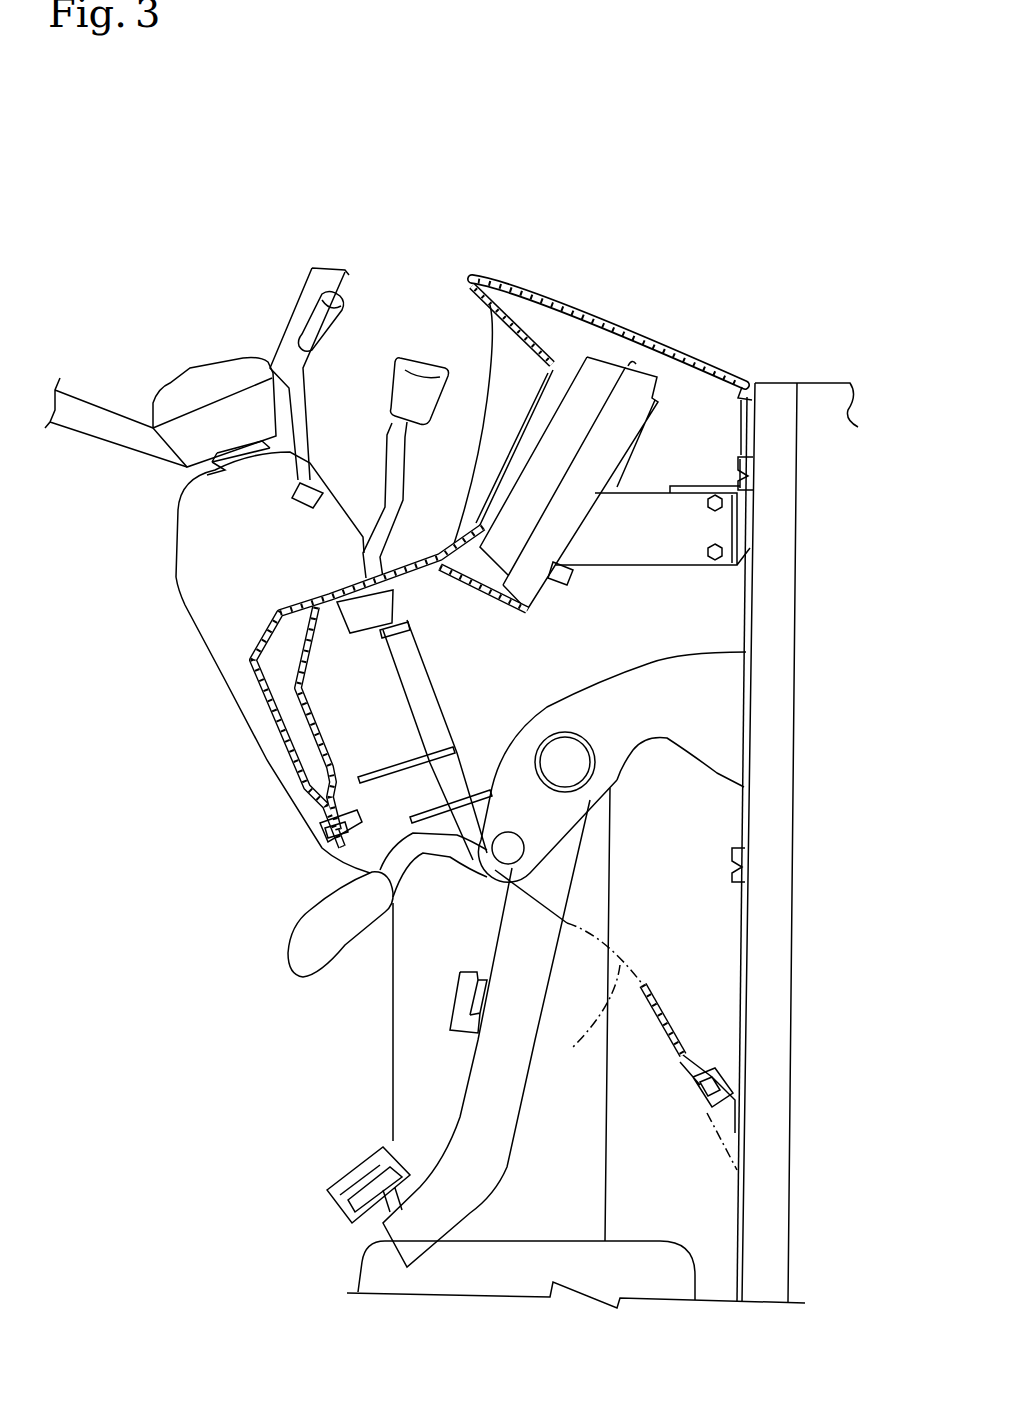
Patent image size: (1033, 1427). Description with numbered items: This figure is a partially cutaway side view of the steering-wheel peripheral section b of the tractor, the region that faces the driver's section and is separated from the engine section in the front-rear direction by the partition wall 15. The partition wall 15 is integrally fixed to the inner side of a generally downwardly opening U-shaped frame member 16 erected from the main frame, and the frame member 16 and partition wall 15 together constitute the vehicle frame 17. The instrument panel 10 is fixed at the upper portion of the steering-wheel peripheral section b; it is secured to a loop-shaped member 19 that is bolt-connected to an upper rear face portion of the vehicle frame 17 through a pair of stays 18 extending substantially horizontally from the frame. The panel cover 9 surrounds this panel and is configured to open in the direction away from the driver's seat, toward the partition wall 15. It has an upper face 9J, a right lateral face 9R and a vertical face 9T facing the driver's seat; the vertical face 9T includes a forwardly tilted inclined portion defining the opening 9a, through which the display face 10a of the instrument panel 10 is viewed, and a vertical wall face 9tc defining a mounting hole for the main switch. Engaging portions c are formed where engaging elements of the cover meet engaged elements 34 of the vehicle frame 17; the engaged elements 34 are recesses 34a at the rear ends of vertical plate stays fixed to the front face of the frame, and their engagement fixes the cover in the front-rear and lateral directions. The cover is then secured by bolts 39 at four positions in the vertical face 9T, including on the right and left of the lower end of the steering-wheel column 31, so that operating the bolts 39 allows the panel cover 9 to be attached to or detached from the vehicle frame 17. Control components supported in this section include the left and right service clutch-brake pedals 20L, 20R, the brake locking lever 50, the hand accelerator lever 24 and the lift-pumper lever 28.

The panel cover 9 is at (526, 263).
The upper face 9J is at (604, 309).
The opening 9a is at (532, 375).
The vertical face 9T is at (310, 578).
The vertical wall face 9tc is at (280, 764).
The right lateral face 9R is at (616, 1020).
The instrument panel 10 is at (500, 542).
The display face 10a is at (494, 451).
The partition wall 15 is at (700, 610).
The frame member 16 is at (780, 652).
The vehicle frame 17 is at (617, 845).
The stay 18 is at (647, 503).
The loop-shaped member 19 is at (633, 363).
The left service clutch-brake pedal 20L is at (362, 1168).
The right service clutch-brake pedal 20R is at (309, 1170).
The hand accelerator lever 24 is at (396, 400).
The lift-pumper lever 28 is at (335, 318).
The steering-wheel column 31 is at (192, 548).
The engaged element 34 is at (813, 682).
The recess 34a is at (757, 478).
The bolt 39 is at (325, 857).
The brake locking lever 50 is at (333, 960).
The steering-wheel peripheral section b is at (268, 1030).
The engaging portion c is at (753, 443).